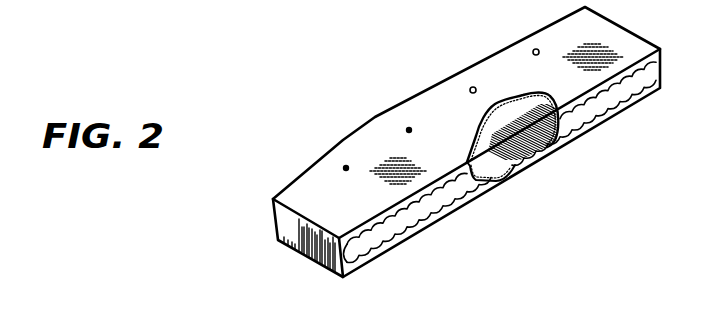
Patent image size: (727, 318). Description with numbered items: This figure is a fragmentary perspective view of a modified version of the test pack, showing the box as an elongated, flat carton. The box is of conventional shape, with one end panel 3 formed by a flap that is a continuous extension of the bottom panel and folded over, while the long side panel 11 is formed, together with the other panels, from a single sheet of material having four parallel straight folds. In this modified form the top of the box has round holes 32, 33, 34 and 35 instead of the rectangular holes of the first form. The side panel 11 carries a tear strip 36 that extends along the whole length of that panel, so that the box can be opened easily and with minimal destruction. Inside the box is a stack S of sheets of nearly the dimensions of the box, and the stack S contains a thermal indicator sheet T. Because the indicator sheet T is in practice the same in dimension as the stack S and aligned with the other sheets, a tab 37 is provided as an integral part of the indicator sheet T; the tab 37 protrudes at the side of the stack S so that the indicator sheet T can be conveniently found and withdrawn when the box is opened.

The end panel 3 is at (282, 221).
The panel 11 is at (361, 263).
The round hole 32 is at (346, 168).
The round hole 33 is at (409, 130).
The round hole 34 is at (472, 88).
The round hole 35 is at (535, 50).
The tear strip 36 is at (415, 217).
The tab 37 is at (515, 167).
The thermal indicator sheet T is at (485, 160).
The stack of sheets S is at (517, 118).